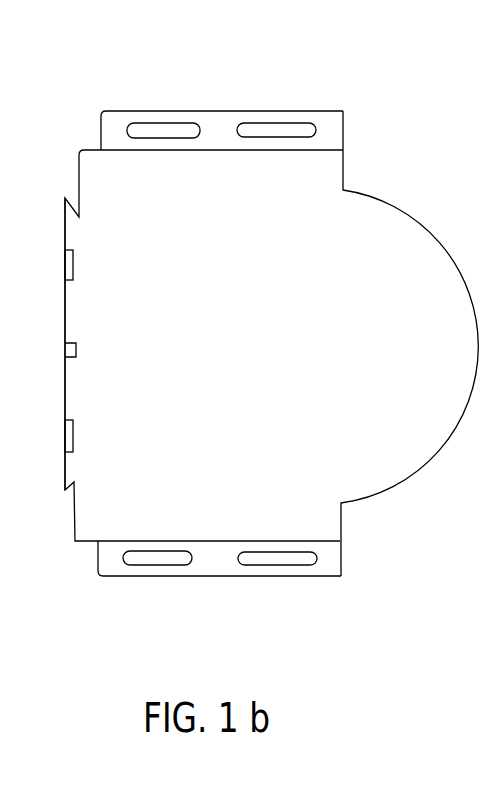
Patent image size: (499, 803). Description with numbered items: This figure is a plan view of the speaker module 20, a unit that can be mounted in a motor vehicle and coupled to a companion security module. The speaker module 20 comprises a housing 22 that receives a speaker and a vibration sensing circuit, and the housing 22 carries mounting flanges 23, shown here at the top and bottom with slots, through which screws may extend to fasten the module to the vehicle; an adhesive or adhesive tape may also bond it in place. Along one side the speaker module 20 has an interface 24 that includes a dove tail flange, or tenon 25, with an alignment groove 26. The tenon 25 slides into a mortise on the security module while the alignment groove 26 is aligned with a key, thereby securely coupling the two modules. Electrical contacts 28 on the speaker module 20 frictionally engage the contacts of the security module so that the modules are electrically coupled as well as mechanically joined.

The speaker module 20 is at (239, 310).
The housing 22 is at (308, 183).
The mounting flanges 23 is at (335, 123).
The interface 24 is at (38, 399).
The dove tail flange (tenon) 25 is at (65, 305).
The alignment groove 26 is at (66, 347).
The electrical contacts 28 is at (65, 263).